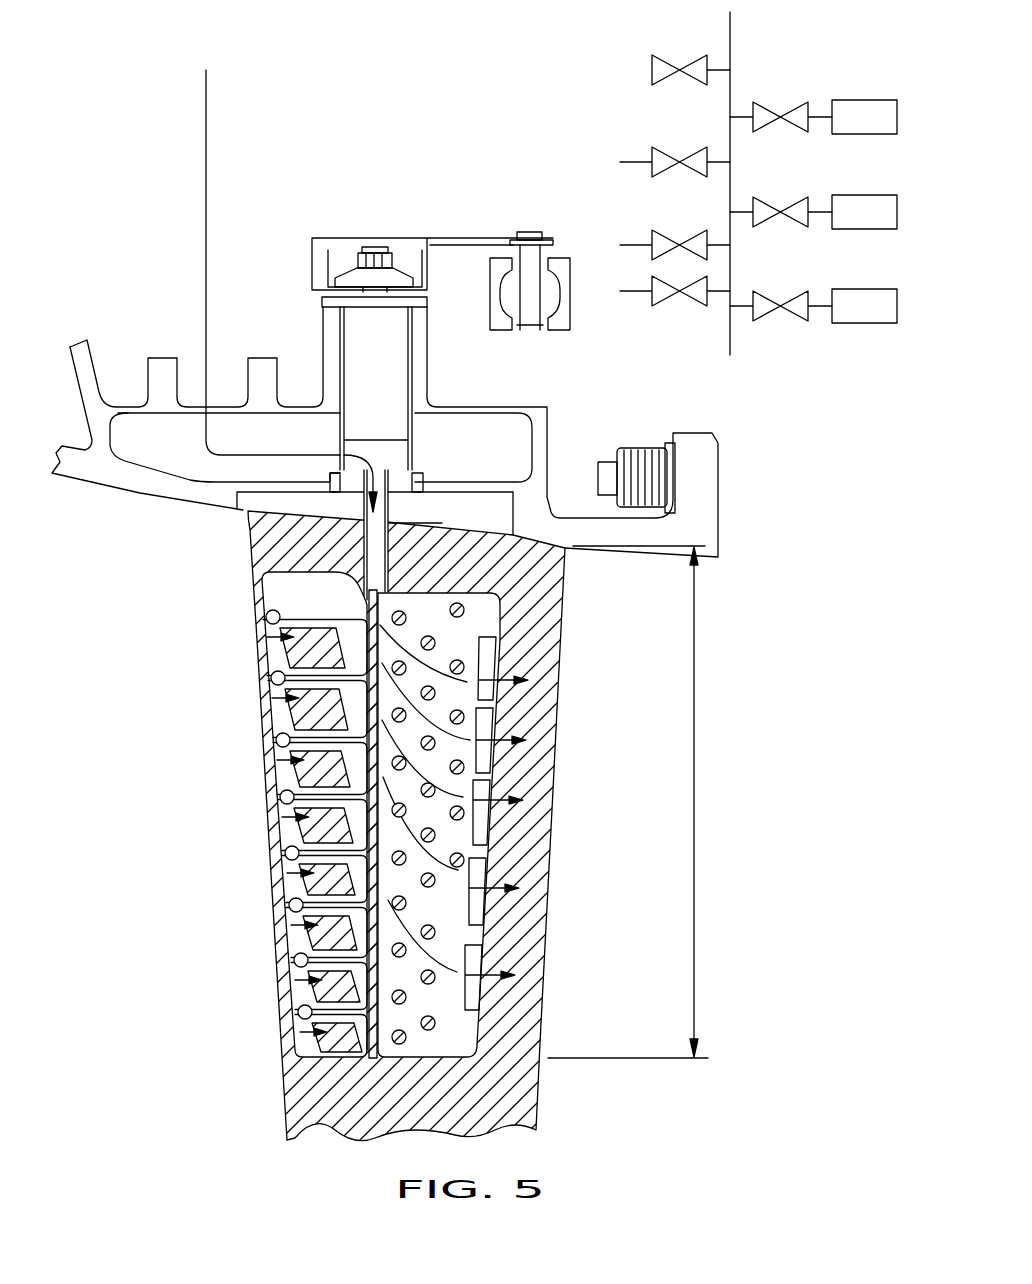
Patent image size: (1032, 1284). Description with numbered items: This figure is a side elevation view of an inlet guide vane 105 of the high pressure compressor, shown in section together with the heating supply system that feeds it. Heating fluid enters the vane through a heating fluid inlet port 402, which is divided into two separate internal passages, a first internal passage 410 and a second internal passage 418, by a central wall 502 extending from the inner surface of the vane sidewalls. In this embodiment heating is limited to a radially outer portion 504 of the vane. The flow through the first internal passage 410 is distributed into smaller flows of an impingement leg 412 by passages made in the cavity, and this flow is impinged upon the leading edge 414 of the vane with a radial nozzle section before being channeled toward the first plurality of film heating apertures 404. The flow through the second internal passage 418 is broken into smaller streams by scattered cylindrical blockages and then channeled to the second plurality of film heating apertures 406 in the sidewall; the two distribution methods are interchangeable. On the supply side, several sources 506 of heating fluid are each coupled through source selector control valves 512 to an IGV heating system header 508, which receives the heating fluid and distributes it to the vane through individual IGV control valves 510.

The inlet guide vane 105 is at (552, 823).
The heating fluid inlet port 402 is at (382, 495).
The first plurality of film heating apertures 404 is at (282, 588).
The second plurality of film heating apertures 406 is at (528, 533).
The first internal passage 410 is at (363, 597).
The impingement leg 412 is at (280, 912).
The leading edge 414 is at (262, 745).
The second internal passage 418 is at (476, 586).
The central wall 502 is at (380, 1040).
The radially outer portion 504 is at (694, 843).
The source of IGV heating fluid 506 is at (883, 129).
The IGV heating system header 508 is at (730, 30).
The individual IGV control valves 510 is at (692, 58).
The source selector control valves 512 is at (765, 102).